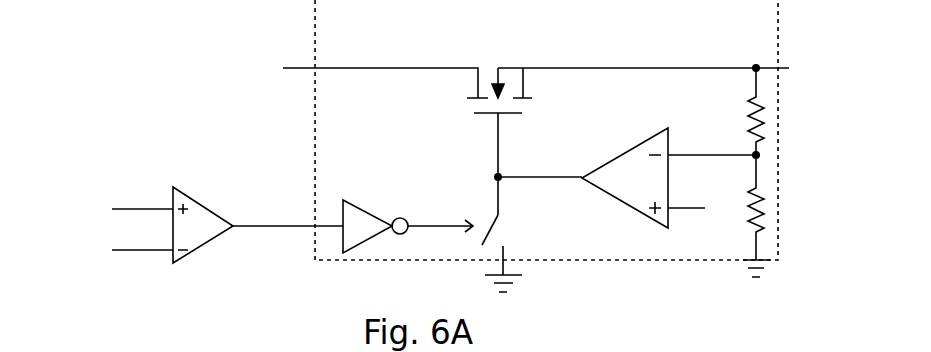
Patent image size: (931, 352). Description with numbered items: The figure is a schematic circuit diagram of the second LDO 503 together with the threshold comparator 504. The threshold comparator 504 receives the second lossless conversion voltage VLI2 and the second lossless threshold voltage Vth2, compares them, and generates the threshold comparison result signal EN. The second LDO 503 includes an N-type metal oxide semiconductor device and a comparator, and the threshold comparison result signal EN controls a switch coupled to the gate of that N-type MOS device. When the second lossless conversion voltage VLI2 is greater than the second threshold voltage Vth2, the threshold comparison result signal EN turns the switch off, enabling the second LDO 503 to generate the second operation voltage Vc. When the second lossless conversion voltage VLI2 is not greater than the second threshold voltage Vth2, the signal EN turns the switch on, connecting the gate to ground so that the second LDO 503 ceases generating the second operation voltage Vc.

The second LDO 503 is at (378, 39).
The threshold comparator 504 is at (186, 195).
The second lossless conversion voltage VLI2 is at (265, 141).
The second lossless threshold voltage Vth2 is at (107, 254).
The threshold comparison result signal EN is at (288, 210).
The second operation voltage Vc is at (665, 72).